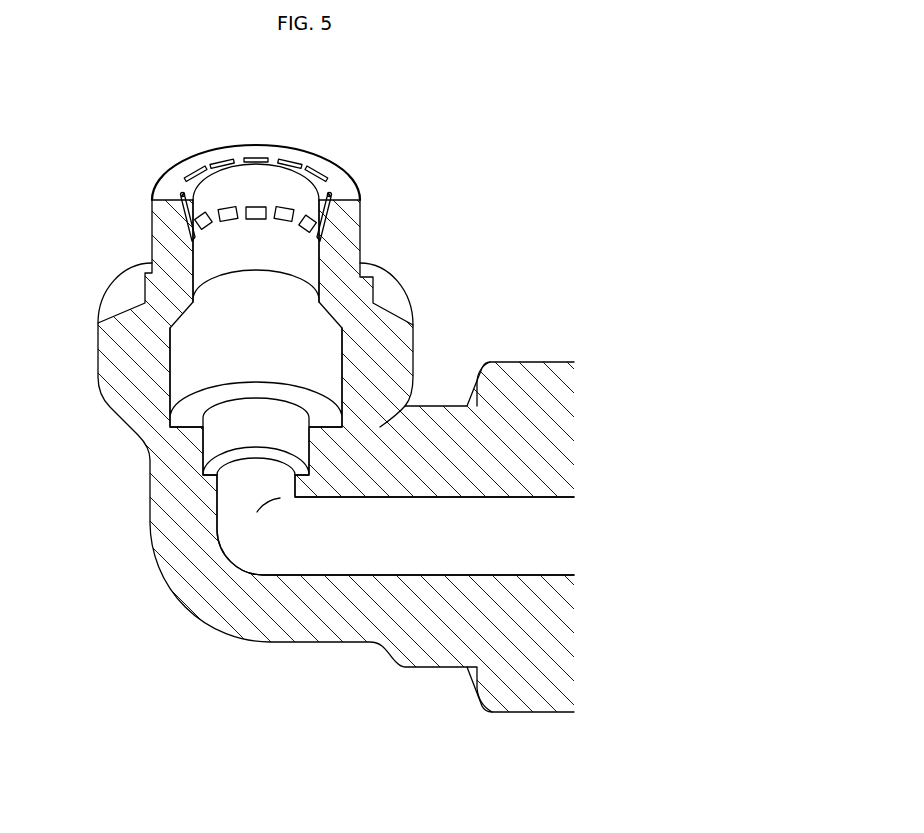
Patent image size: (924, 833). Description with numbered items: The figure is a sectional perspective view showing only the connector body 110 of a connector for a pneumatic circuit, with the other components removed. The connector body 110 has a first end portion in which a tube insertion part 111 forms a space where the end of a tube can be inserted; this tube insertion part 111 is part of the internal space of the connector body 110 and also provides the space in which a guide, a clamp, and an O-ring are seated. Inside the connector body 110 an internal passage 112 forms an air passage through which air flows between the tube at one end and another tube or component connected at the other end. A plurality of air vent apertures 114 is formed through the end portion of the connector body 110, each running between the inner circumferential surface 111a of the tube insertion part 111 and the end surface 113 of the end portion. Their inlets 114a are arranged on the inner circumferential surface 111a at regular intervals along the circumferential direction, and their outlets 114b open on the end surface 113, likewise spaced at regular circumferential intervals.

The connector body 110 is at (436, 350).
The tube insertion part 111 is at (198, 374).
The inner circumferential surface of the tube insertion part 111a is at (207, 263).
The internal passage 112 is at (317, 543).
The end surface of the end portion of the connector body 113 is at (328, 175).
The air vent aperture 114 is at (332, 216).
The inlet of the air vent aperture 114a is at (217, 218).
The outlet of the air vent aperture 114b is at (257, 157).